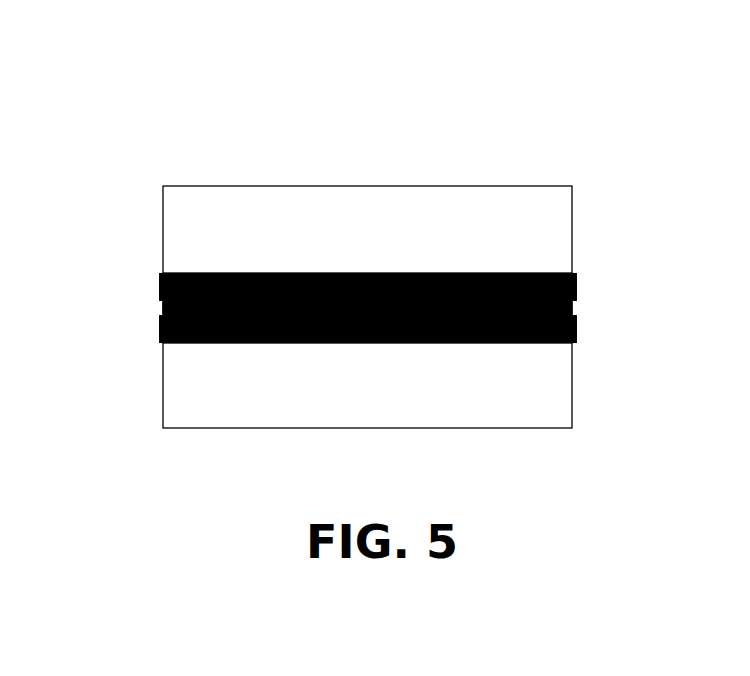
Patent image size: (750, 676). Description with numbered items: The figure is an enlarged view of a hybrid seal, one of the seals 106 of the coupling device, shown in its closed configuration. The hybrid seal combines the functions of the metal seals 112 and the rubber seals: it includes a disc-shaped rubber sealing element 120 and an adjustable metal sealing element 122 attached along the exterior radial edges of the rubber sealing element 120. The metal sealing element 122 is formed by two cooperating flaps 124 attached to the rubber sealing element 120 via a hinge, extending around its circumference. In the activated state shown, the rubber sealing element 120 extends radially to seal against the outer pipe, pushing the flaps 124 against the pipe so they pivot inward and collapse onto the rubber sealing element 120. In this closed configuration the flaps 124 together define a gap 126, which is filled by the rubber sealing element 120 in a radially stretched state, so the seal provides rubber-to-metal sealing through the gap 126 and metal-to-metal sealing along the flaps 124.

The seals 106 is at (384, 146).
The metal seals 112 is at (463, 193).
The rubber sealing element 120 is at (267, 273).
The metal sealing element 122 is at (117, 368).
The flaps 124 is at (158, 283).
The gap 126 is at (150, 305).